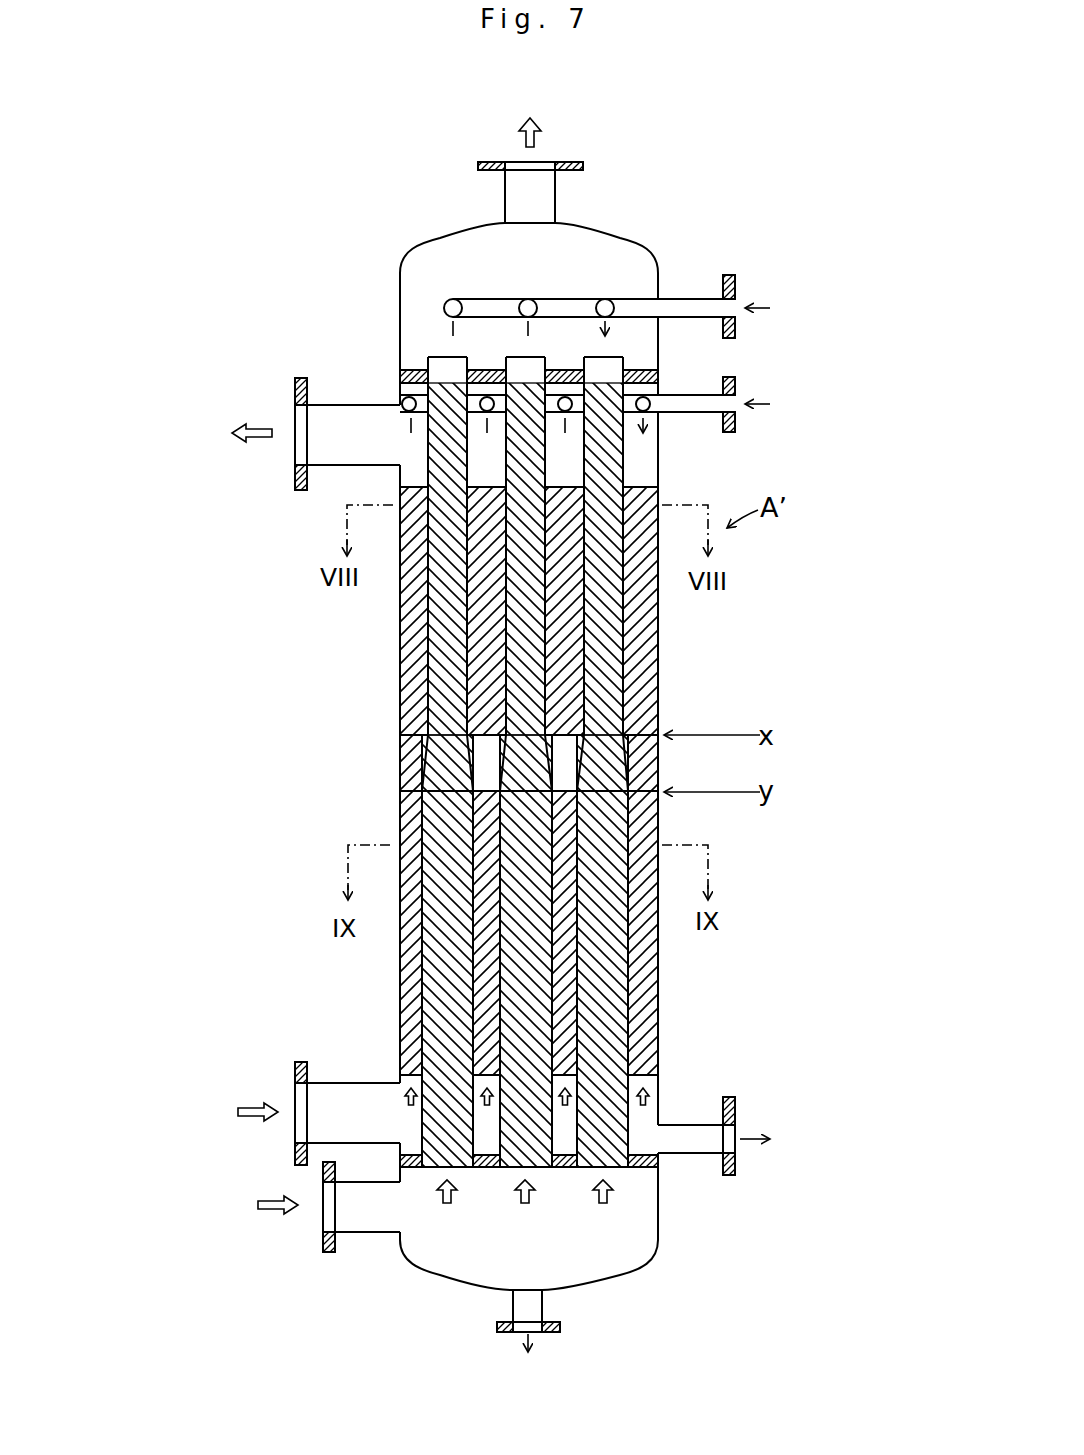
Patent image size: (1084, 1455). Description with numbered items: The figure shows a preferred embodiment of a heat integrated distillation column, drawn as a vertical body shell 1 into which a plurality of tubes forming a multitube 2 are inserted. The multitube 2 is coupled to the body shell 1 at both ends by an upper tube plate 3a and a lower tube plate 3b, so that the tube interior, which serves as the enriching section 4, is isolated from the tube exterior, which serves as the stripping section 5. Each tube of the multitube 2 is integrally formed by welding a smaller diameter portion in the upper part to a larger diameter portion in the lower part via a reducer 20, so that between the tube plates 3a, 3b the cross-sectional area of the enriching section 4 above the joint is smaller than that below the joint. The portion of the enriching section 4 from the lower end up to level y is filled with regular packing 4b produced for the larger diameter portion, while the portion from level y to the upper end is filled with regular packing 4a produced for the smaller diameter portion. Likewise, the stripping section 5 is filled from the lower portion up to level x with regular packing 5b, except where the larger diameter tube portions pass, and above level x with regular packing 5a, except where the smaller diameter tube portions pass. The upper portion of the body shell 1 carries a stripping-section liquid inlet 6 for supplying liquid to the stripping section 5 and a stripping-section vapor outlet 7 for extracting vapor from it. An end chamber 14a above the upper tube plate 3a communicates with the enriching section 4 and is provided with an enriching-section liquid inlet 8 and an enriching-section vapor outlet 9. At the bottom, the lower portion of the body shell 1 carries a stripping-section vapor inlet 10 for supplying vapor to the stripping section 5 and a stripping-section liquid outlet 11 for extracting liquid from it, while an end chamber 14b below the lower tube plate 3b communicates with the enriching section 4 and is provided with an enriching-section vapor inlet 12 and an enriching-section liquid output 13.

The body shell 1 is at (400, 752).
The tubes (multitube) 2 is at (627, 607).
The upper tube plate 3a is at (417, 368).
The lower tube plate 3b is at (407, 1168).
The tube interior (enriching section) 4 is at (508, 775).
The regular packing 4a is at (447, 708).
The regular packing 4b is at (445, 1040).
The tube exterior (stripping section) 5 is at (518, 785).
The regular packing 5a is at (492, 633).
The regular packing 5b is at (560, 1062).
The stripping-section liquid inlet 6 is at (742, 420).
The stripping-section vapor outlet 7 is at (285, 457).
The enriching-section liquid inlet 8 is at (742, 318).
The enriching-section vapor outlet 9 is at (513, 160).
The stripping-section vapor inlet 10 is at (295, 1100).
The stripping-section liquid outlet 11 is at (745, 1125).
The enriching-section vapor inlet 12 is at (323, 1222).
The enriching-section liquid output 13 is at (523, 1332).
The end chamber 14a is at (583, 225).
The end chamber 14b is at (613, 1275).
The reducer 20 is at (627, 765).